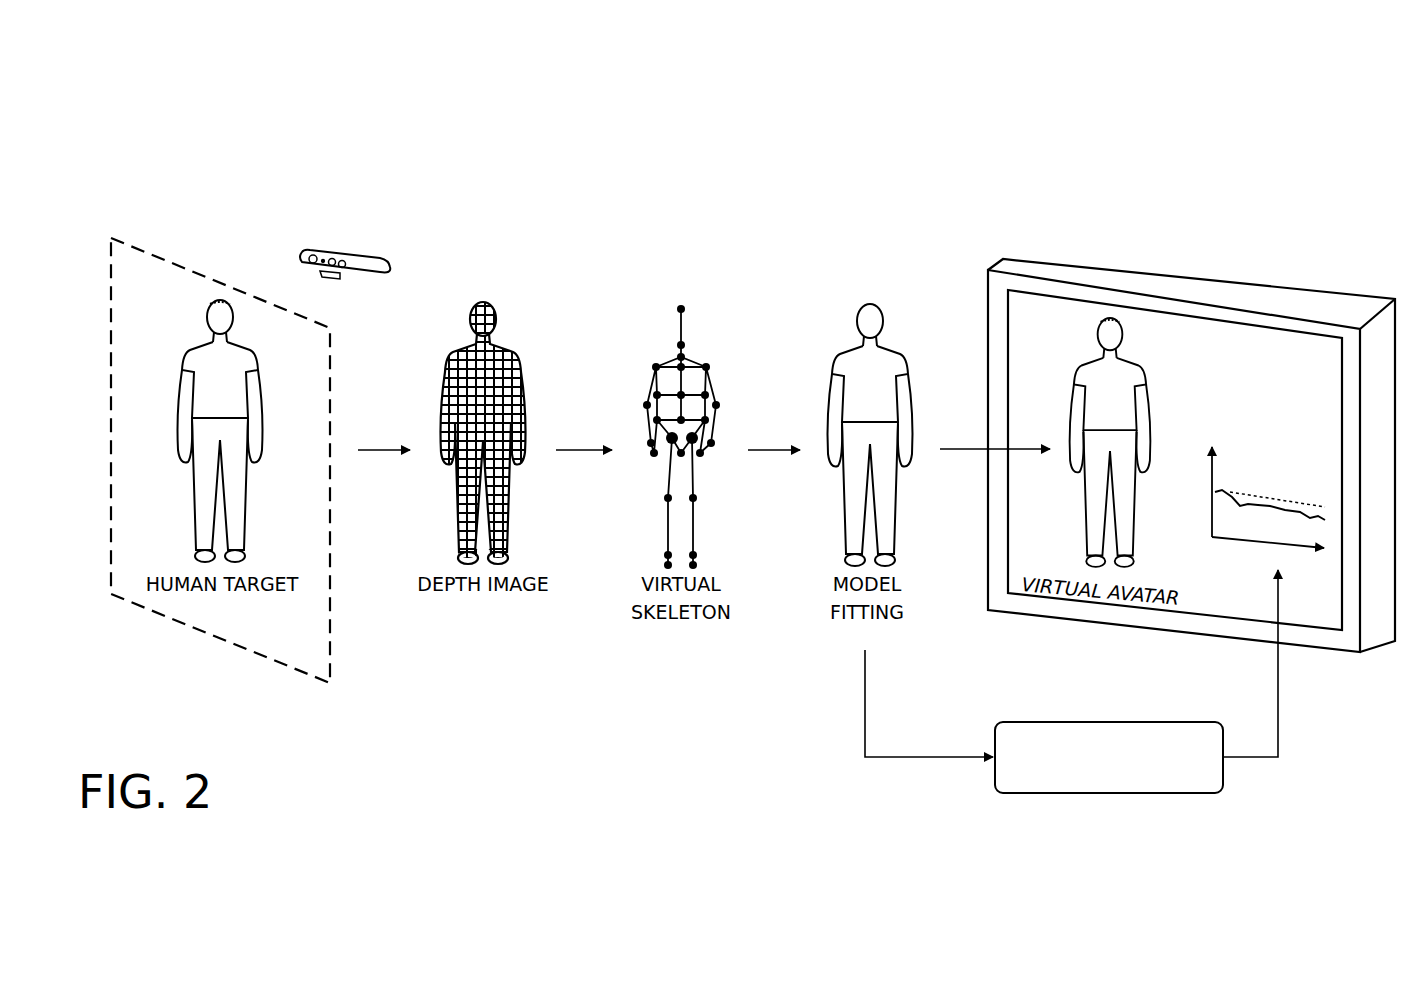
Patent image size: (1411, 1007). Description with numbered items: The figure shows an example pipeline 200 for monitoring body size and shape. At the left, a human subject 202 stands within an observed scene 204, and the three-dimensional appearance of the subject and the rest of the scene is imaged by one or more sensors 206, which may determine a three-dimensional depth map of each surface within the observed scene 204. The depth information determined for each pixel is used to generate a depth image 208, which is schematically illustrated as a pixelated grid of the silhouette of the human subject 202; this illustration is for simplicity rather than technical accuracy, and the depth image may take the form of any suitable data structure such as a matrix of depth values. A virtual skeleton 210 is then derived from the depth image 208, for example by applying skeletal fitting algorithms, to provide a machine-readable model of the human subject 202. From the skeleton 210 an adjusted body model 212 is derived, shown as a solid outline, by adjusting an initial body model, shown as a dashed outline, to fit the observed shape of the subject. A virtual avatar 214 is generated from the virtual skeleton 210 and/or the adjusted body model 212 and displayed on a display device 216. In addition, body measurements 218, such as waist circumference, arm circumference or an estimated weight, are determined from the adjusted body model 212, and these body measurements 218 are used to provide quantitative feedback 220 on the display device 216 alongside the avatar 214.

The pipeline 200 is at (897, 70).
The human subject 202 is at (247, 350).
The observed scene 204 is at (220, 460).
The sensors 206 is at (360, 252).
The depth image 208 is at (492, 293).
The virtual skeleton 210 is at (690, 293).
The adjusted body model 212 is at (872, 293).
The virtual avatar 214 is at (1078, 363).
The display device 216 is at (1020, 262).
The body measurements 218 is at (1109, 757).
The quantitative feedback 220 is at (1256, 440).